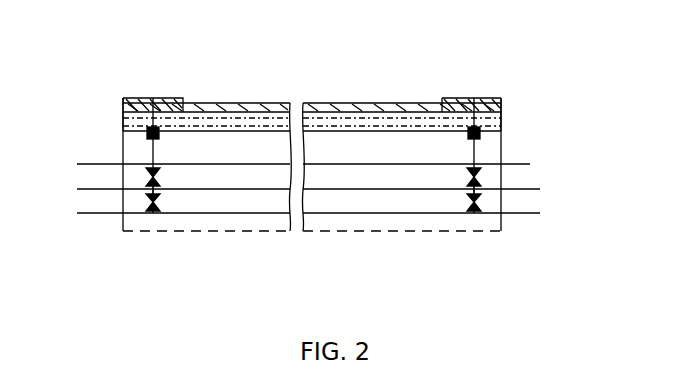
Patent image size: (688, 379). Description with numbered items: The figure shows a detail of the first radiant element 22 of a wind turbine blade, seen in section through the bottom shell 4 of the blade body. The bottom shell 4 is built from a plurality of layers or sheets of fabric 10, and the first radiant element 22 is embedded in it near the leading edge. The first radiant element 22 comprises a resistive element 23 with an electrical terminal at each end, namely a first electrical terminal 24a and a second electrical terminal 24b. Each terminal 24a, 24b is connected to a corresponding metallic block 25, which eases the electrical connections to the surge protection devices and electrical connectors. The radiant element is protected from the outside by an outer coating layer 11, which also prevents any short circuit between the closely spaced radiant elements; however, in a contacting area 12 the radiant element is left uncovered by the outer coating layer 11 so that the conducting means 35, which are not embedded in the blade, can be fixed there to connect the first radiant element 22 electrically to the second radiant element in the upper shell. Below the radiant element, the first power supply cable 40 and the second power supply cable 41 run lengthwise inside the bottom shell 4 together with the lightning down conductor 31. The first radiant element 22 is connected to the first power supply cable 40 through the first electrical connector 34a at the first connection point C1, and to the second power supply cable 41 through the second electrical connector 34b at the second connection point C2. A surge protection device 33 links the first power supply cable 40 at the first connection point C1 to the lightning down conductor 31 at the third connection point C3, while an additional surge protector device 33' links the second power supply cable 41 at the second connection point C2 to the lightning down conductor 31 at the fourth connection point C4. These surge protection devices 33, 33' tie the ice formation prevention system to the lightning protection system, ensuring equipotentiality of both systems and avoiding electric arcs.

The layers or sheets of fabric 10 is at (372, 125).
The outer coating layer 11 is at (240, 107).
The first radiant element 22 is at (327, 107).
The resistive element 23 is at (290, 103).
The contacting area 12 is at (138, 98).
The conducting means 35 is at (153, 100).
The metallic block 25 is at (165, 118).
The first electrical connector 34a is at (148, 140).
The second electrical connector 34b is at (480, 140).
The first electrical terminal 24a is at (123, 108).
The second electrical terminal 24b is at (502, 102).
The first power supply cable 40 is at (284, 162).
The lightning down conductor 31 is at (290, 189).
The second power supply cable 41 is at (290, 214).
The bottom shell 4 is at (273, 203).
The surge protection device 33 is at (364, 152).
The additional surge protector device 33' is at (374, 228).
The first connection point C1 is at (150, 172).
The second connection point C2 is at (467, 190).
The third connection point C3 is at (160, 191).
The fourth connection point C4 is at (476, 160).